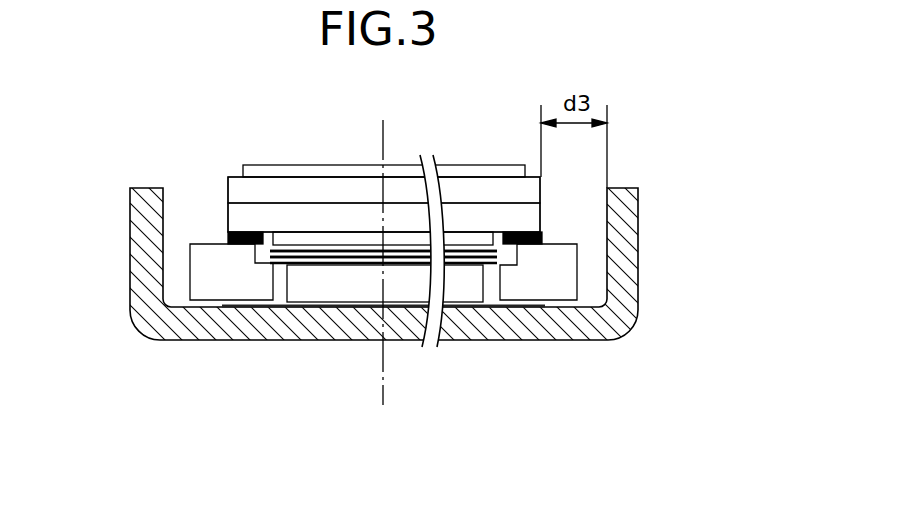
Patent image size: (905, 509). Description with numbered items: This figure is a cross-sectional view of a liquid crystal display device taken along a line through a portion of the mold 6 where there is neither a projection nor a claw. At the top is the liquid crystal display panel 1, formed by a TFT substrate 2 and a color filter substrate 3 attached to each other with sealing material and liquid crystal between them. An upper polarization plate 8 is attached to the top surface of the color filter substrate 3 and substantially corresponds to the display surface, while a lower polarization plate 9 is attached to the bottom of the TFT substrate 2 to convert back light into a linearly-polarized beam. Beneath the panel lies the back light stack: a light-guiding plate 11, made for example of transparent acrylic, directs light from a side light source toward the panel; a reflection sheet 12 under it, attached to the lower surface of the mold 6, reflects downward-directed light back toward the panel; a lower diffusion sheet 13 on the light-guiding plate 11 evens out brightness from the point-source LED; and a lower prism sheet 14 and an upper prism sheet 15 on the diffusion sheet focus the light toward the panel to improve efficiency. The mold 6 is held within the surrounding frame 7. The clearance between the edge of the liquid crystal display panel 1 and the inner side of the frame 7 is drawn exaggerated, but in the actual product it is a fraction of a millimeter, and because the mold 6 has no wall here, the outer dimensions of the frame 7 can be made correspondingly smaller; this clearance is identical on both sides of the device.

The liquid crystal display panel 1 is at (233, 168).
The TFT substrate 2 is at (392, 218).
The color filter substrate 3 is at (340, 188).
The mold 6 is at (205, 290).
The frame 7 is at (142, 212).
The upper polarization plate 8 is at (292, 170).
The lower polarization plate 9 is at (467, 238).
The light-guiding plate 11 is at (312, 288).
The reflection sheet 12 is at (265, 306).
The lower diffusion sheet 13 is at (350, 263).
The lower prism sheet 14 is at (403, 263).
The upper prism sheet 15 is at (425, 256).